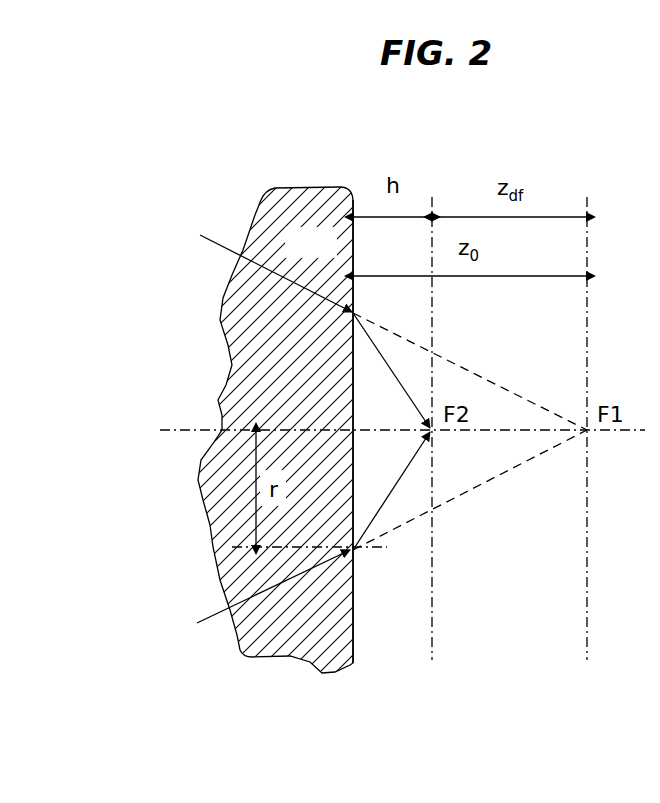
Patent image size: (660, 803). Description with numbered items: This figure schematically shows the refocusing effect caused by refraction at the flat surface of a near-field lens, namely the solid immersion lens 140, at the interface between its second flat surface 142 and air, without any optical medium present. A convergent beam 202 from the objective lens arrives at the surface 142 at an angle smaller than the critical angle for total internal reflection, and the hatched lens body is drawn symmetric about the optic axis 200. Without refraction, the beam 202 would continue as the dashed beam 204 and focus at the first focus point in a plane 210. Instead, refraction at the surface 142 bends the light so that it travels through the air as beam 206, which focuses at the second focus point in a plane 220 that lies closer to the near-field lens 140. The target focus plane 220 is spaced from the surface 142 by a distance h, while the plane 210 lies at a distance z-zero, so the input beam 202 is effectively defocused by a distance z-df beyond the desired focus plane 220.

The solid immersion lens (SIL) 140 is at (333, 254).
The second flat surface 142 is at (353, 643).
The optic axis 200 is at (190, 427).
The convergent beam 202 is at (229, 253).
The beam 204 is at (490, 384).
The beam 206 is at (374, 342).
The plane 210 is at (587, 600).
The plane 220 is at (432, 600).